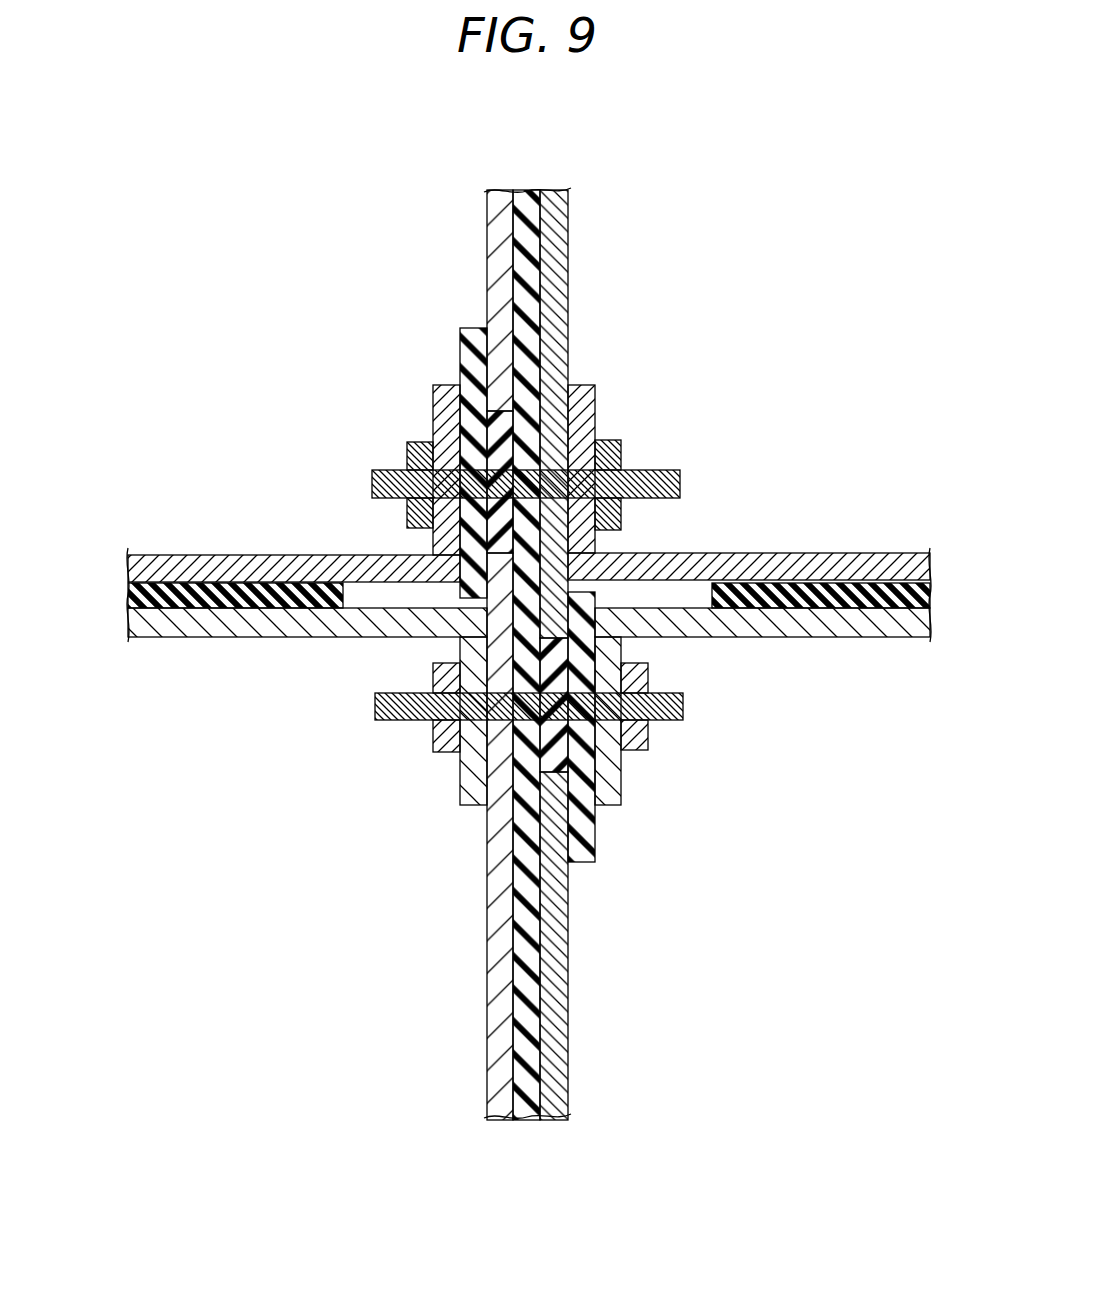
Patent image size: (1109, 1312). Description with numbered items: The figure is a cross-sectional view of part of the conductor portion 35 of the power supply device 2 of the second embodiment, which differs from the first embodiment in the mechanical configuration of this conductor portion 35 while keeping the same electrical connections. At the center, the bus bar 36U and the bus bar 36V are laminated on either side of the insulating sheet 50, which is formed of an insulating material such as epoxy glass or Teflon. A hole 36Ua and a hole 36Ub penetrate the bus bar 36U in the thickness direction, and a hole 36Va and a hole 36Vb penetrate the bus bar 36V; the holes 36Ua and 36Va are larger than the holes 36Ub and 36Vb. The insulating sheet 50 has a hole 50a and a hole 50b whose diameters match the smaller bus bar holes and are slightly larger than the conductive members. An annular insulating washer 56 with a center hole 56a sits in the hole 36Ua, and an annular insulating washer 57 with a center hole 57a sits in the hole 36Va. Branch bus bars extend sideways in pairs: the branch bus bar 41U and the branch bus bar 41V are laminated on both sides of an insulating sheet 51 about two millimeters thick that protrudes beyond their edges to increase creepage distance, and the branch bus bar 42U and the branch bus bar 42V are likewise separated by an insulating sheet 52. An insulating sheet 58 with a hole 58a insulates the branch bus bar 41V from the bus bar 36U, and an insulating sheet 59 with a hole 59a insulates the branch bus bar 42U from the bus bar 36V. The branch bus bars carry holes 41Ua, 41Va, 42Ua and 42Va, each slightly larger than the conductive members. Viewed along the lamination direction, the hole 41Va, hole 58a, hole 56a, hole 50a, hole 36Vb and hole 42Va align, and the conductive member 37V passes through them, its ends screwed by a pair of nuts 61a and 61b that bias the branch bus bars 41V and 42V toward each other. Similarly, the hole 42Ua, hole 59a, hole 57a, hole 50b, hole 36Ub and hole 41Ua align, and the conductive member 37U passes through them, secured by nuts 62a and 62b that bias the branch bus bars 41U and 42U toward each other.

The power supply device 2 is at (800, 158).
The conductor portion 35 is at (745, 326).
The bus bar 36U is at (500, 200).
The hole 36Ua is at (497, 413).
The hole 36Ub is at (505, 708).
The bus bar 36V is at (553, 200).
The hole 36Va is at (585, 835).
The hole 36Vb is at (582, 455).
The conductive member 37U is at (680, 708).
The conductive member 37V is at (680, 490).
The branch bus bar 41U is at (205, 622).
The hole 41Ua is at (470, 690).
The branch bus bar 41V is at (180, 565).
The hole 41Va is at (447, 485).
The branch bus bar 42U is at (850, 625).
The hole 42Ua is at (622, 708).
The branch bus bar 42V is at (870, 562).
The hole 42Va is at (612, 512).
The insulating sheet 50 is at (527, 200).
The hole 50a is at (530, 490).
The hole 50b is at (520, 708).
The insulating sheet 51 is at (158, 595).
The insulating sheet 52 is at (905, 600).
The insulating washer 56 is at (465, 447).
The hole 56a is at (480, 482).
The insulating washer 57 is at (560, 775).
The hole 57a is at (565, 742).
The insulating sheet 58 is at (472, 347).
The hole 58a is at (470, 487).
The insulating sheet 59 is at (585, 862).
The hole 59a is at (612, 695).
The nut 61a is at (415, 510).
The nut 61b is at (612, 462).
The nut 62a is at (440, 742).
The nut 62b is at (640, 690).